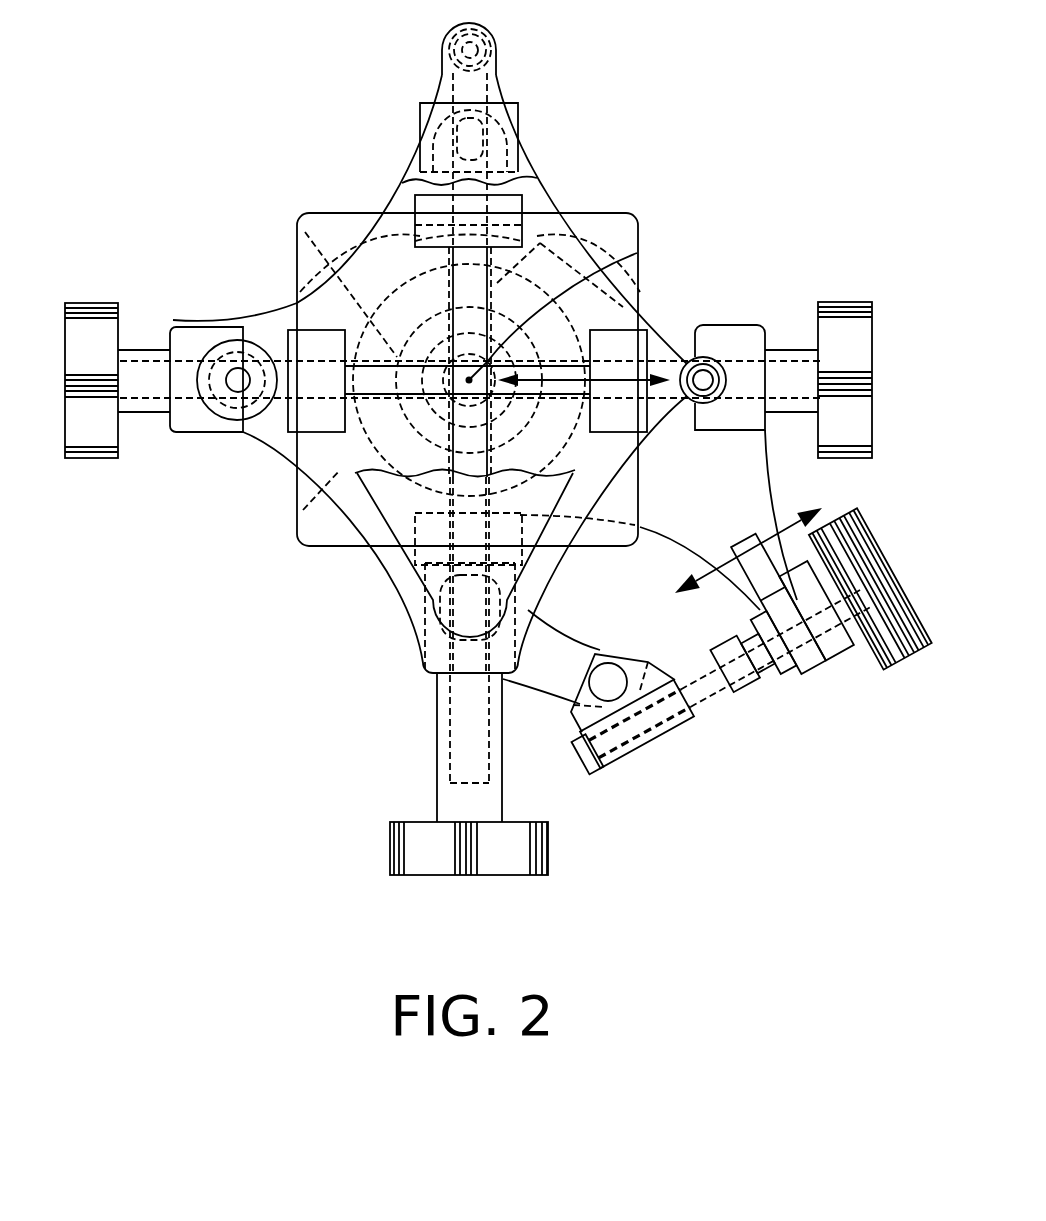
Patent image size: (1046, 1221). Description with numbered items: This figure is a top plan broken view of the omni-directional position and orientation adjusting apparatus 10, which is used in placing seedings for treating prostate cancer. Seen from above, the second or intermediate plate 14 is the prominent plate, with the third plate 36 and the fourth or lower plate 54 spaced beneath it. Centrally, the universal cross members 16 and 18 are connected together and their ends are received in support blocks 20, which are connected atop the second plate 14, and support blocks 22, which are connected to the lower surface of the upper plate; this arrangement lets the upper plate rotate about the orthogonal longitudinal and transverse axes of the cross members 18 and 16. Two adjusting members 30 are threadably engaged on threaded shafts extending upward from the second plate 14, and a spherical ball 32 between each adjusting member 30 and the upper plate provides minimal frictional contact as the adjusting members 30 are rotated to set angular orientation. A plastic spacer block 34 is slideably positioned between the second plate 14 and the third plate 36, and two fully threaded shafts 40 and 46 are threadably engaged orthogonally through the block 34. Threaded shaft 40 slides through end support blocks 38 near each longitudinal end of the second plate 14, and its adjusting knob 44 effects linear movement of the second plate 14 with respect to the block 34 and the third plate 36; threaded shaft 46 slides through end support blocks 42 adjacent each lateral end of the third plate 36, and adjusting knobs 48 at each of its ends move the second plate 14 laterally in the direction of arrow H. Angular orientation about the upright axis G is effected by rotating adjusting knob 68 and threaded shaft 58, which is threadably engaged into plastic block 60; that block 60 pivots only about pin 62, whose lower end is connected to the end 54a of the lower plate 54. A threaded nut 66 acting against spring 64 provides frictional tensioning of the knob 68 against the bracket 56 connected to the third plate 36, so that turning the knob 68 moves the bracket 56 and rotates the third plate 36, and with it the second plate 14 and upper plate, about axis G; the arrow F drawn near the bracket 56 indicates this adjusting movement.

The omni-directional position and orientation adjusting apparatus 10 is at (672, 136).
The second plate member 14 is at (365, 240).
The universal cross member 16 is at (437, 283).
The universal cross member 18 is at (375, 300).
The support block 20 is at (515, 196).
The support block 22 is at (305, 327).
The adjusting member 30 is at (208, 410).
The spherical ball 32 is at (240, 395).
The plastic spacer block 34 is at (608, 546).
The third plate member 36 is at (688, 300).
The end support block 38 is at (518, 113).
The threaded shaft 40 is at (576, 208).
The end support block 42 is at (222, 432).
The adjusting knob 44 is at (390, 847).
The threaded shaft 46 is at (146, 360).
The adjusting knob 48 is at (110, 307).
The fourth plate member 54 is at (313, 498).
The end of lower plate 54a is at (555, 700).
The bracket 56 is at (762, 608).
The threaded shaft 58 is at (710, 695).
The plastic block 60 is at (650, 742).
The pin 62 is at (610, 683).
The spring 64 is at (778, 664).
The threaded nut 66 is at (748, 678).
The adjusting knob 68 is at (885, 650).
The direction arrow F is at (712, 553).
The upright longitudinal axis G is at (637, 253).
The arrow H is at (640, 457).